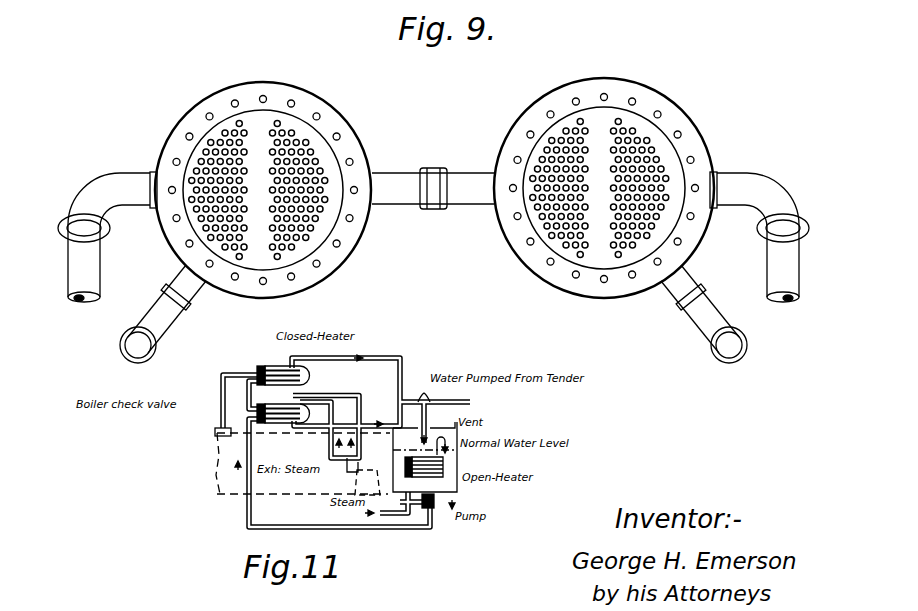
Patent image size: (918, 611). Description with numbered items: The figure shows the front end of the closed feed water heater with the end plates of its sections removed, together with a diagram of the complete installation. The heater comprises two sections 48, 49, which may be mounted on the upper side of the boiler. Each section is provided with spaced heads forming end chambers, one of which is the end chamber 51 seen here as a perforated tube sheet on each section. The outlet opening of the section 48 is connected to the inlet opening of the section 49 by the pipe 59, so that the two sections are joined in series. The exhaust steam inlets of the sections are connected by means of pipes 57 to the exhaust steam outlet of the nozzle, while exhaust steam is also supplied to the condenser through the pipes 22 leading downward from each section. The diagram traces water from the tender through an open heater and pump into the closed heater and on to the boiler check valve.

The section 48 is at (272, 64).
The section 49 is at (627, 84).
The end chamber 51 is at (268, 112).
The pipe 59 is at (398, 178).
The pipe 57 is at (90, 270).
The pipe 22 is at (168, 324).